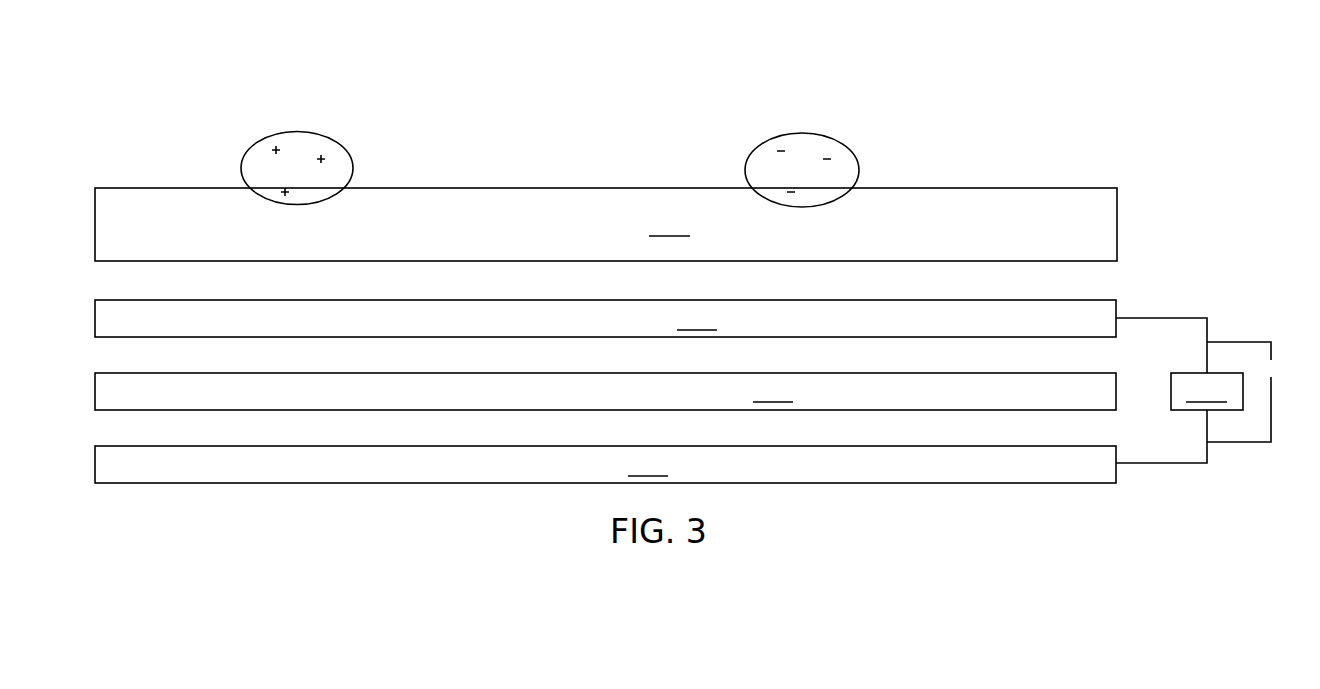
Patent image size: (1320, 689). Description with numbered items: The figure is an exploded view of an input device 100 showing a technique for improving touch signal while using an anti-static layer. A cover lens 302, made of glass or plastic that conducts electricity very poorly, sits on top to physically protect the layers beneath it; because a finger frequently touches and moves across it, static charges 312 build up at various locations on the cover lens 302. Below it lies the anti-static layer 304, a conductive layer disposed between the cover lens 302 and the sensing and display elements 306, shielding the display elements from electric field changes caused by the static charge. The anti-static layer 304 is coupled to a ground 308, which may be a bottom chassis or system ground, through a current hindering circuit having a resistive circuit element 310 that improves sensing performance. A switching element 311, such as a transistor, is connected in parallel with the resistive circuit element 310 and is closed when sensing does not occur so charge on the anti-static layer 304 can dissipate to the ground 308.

The input device 100 is at (128, 104).
The cover lens 302 is at (606, 224).
The anti-static layer 304 is at (605, 318).
The sensing and display elements 306 is at (605, 391).
The ground 308 is at (605, 464).
The resistive circuit element 310 is at (1179, 390).
The switching element 311 is at (1278, 378).
The charges 312 is at (310, 133).